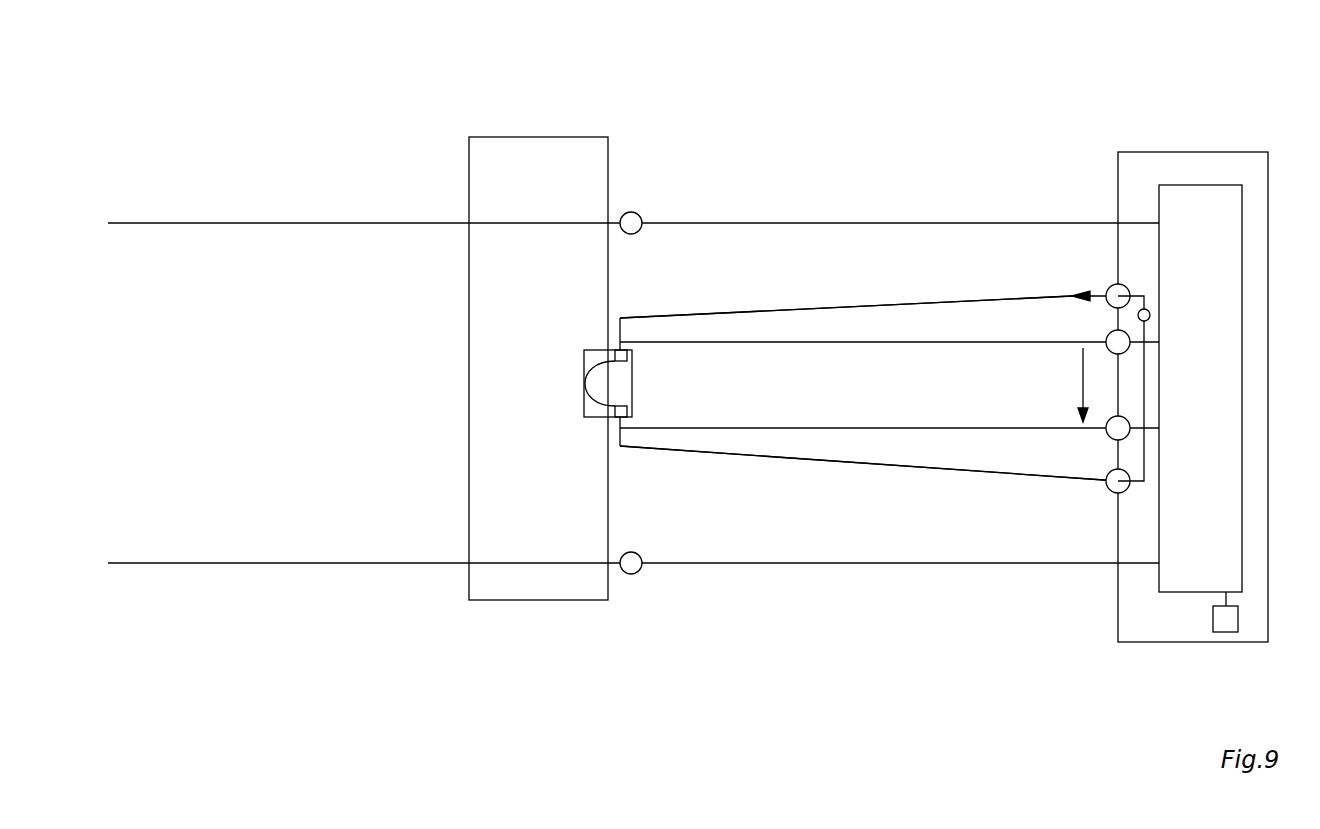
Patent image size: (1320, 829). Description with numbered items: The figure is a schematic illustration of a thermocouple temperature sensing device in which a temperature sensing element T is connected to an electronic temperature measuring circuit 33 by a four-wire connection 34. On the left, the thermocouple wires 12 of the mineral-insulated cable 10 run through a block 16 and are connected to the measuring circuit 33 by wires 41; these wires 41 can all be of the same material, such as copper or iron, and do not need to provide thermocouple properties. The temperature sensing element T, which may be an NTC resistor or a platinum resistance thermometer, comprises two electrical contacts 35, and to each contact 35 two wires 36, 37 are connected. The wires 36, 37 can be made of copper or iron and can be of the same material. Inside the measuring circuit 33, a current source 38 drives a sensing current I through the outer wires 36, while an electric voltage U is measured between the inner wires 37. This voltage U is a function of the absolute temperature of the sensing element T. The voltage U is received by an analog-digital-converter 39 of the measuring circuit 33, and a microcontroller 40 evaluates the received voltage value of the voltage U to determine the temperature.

The mineral-insulated cable 10 is at (366, 128).
The thermocouple wires 12 is at (358, 223).
The wheel / axle unit 16 is at (549, 137).
The wires 41 is at (800, 222).
The four-wire connection 34 is at (682, 292).
The wires 36 is at (885, 304).
The wires 37 is at (955, 343).
The electrical contacts 35 is at (590, 367).
The temperature sensing element T is at (584, 403).
The sensing current I is at (1081, 278).
The electric voltage U is at (1072, 385).
The electronic temperature measuring circuit 33 is at (1152, 152).
The current source 38 is at (1149, 311).
The analog-digital-converter 39 is at (1225, 185).
The microcontroller 40 is at (1226, 632).